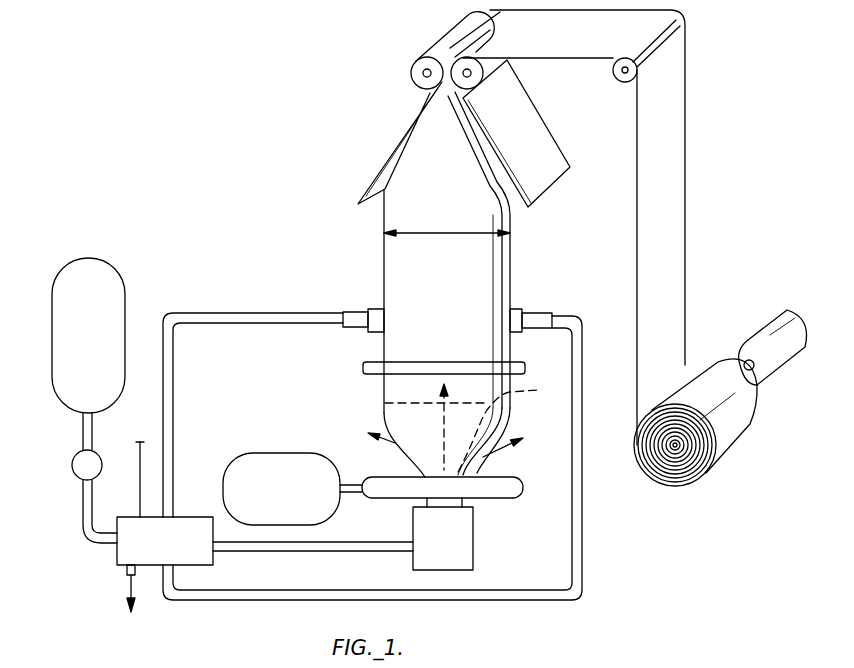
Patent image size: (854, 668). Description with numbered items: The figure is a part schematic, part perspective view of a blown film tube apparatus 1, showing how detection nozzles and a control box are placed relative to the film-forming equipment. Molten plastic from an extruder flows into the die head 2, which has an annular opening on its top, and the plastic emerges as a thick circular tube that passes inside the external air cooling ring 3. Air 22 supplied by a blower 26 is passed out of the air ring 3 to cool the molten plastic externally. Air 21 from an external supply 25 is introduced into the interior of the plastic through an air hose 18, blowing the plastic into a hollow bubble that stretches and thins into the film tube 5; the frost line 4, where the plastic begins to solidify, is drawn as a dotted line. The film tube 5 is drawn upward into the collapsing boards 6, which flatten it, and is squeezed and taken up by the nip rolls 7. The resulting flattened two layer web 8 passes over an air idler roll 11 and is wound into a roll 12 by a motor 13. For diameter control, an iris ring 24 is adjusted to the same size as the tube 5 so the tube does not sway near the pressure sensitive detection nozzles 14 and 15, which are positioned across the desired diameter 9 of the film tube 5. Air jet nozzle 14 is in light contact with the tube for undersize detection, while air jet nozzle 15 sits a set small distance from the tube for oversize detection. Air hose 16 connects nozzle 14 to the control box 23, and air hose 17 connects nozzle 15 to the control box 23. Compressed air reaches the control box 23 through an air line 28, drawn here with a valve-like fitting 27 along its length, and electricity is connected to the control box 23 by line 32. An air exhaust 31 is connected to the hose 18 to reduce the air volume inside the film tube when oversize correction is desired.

The blown film tube apparatus 1 is at (174, 134).
The die head 2 is at (452, 550).
The external air cooling ring 3 is at (521, 496).
The frost line 4 is at (506, 429).
The film tube 5 is at (502, 260).
The collapsing boards 6 is at (402, 140).
The nip rolls 7 is at (410, 68).
The flattened two layer web 8 is at (686, 195).
The desired diameter 9 is at (440, 232).
The air idler roll 11 is at (618, 82).
The roll 12 is at (738, 440).
The motor 13 is at (765, 320).
The air jet nozzle 14 is at (352, 311).
The air jet nozzle 15 is at (540, 311).
The air hose 16 is at (227, 312).
The air hose 17 is at (583, 400).
The air hose 18 is at (297, 553).
The air 21 is at (443, 415).
The air 22 is at (408, 470).
The control box 23 is at (152, 552).
The iris ring 24 is at (363, 366).
The external supply 25 is at (75, 342).
The blower 26 is at (267, 499).
The valve 27 is at (76, 478).
The air line 28 is at (83, 432).
The air exhaust 31 is at (125, 572).
The line 32 is at (135, 470).